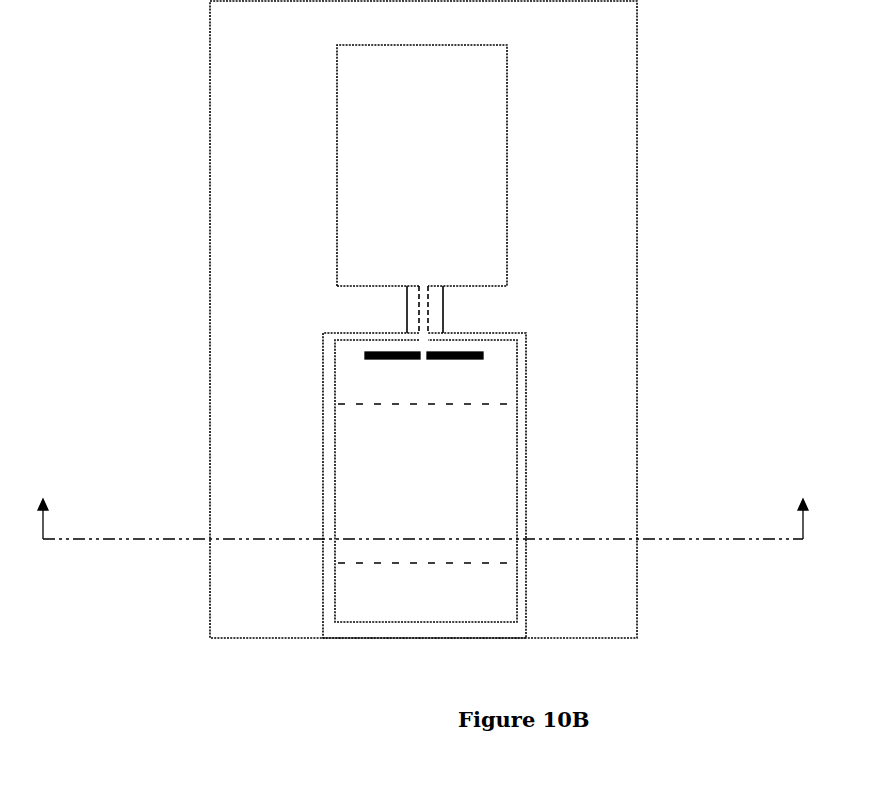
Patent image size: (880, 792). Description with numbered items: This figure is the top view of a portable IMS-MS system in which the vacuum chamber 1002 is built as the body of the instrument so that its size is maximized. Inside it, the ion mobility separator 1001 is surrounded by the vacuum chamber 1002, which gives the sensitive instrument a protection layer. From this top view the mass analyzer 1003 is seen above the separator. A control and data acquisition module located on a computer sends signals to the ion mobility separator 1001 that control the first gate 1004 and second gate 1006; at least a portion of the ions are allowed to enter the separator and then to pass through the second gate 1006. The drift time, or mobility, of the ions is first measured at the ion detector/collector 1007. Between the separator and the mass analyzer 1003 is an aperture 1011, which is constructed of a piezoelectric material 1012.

The ion mobility separator 1001 is at (416, 490).
The vacuum chamber 1002 is at (236, 430).
The mass analyzer 1003 is at (336, 163).
The first gate 1004 is at (360, 563).
The second gate 1006 is at (378, 403).
The ion detector/collector 1007 is at (370, 352).
The aperture 1011 is at (440, 310).
The piezoelectric material 1012 is at (410, 310).